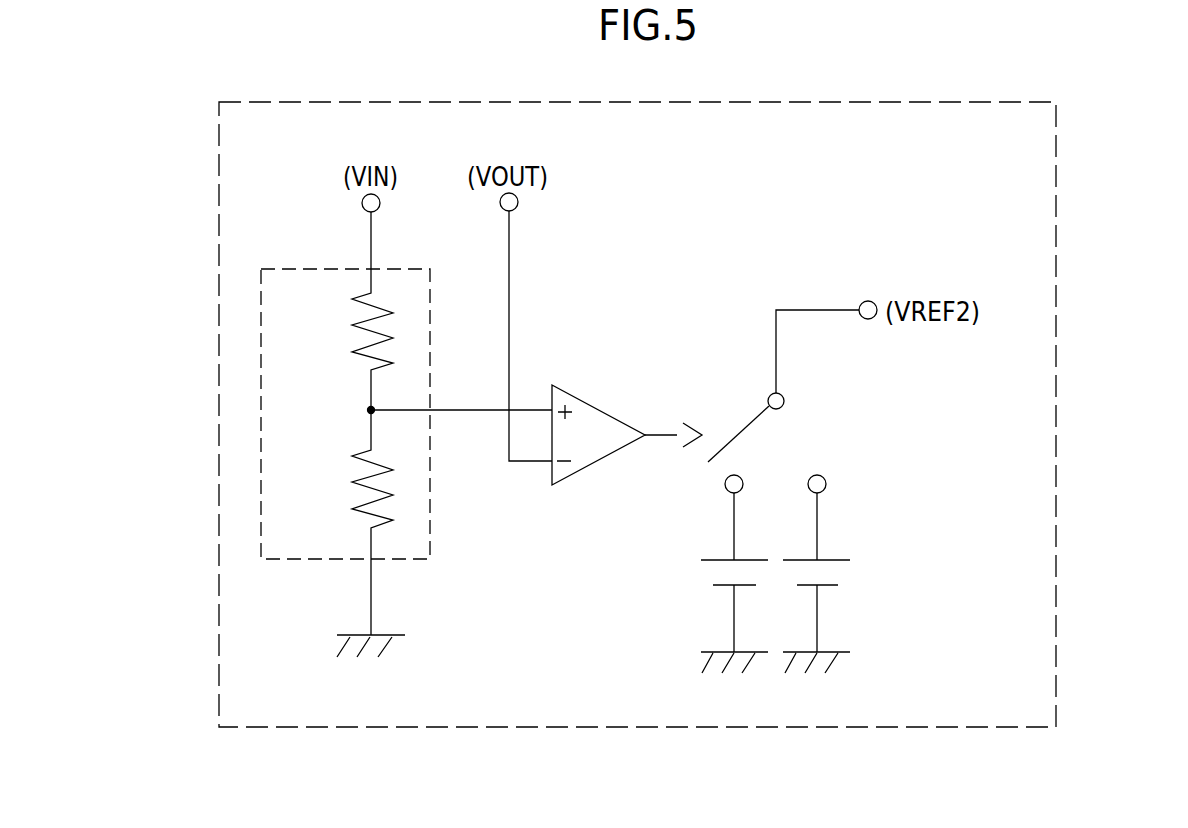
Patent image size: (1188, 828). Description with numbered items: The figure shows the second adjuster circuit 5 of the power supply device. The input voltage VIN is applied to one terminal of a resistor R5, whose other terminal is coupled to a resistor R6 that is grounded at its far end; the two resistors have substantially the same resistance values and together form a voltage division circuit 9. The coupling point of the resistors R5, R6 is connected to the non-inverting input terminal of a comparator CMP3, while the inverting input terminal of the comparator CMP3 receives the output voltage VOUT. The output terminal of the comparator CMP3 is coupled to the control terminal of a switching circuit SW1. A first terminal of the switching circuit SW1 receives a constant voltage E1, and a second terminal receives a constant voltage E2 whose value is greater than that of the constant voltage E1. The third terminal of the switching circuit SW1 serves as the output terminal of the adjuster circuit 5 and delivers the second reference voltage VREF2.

The adjuster circuit 5 is at (1056, 206).
The voltage division circuit 9 is at (287, 423).
The resistor R5 is at (349, 311).
The resistor R6 is at (349, 522).
The comparator CMP3 is at (627, 448).
The switching circuit SW1 is at (783, 386).
The constant voltage E1 is at (710, 574).
The constant voltage E2 is at (841, 574).